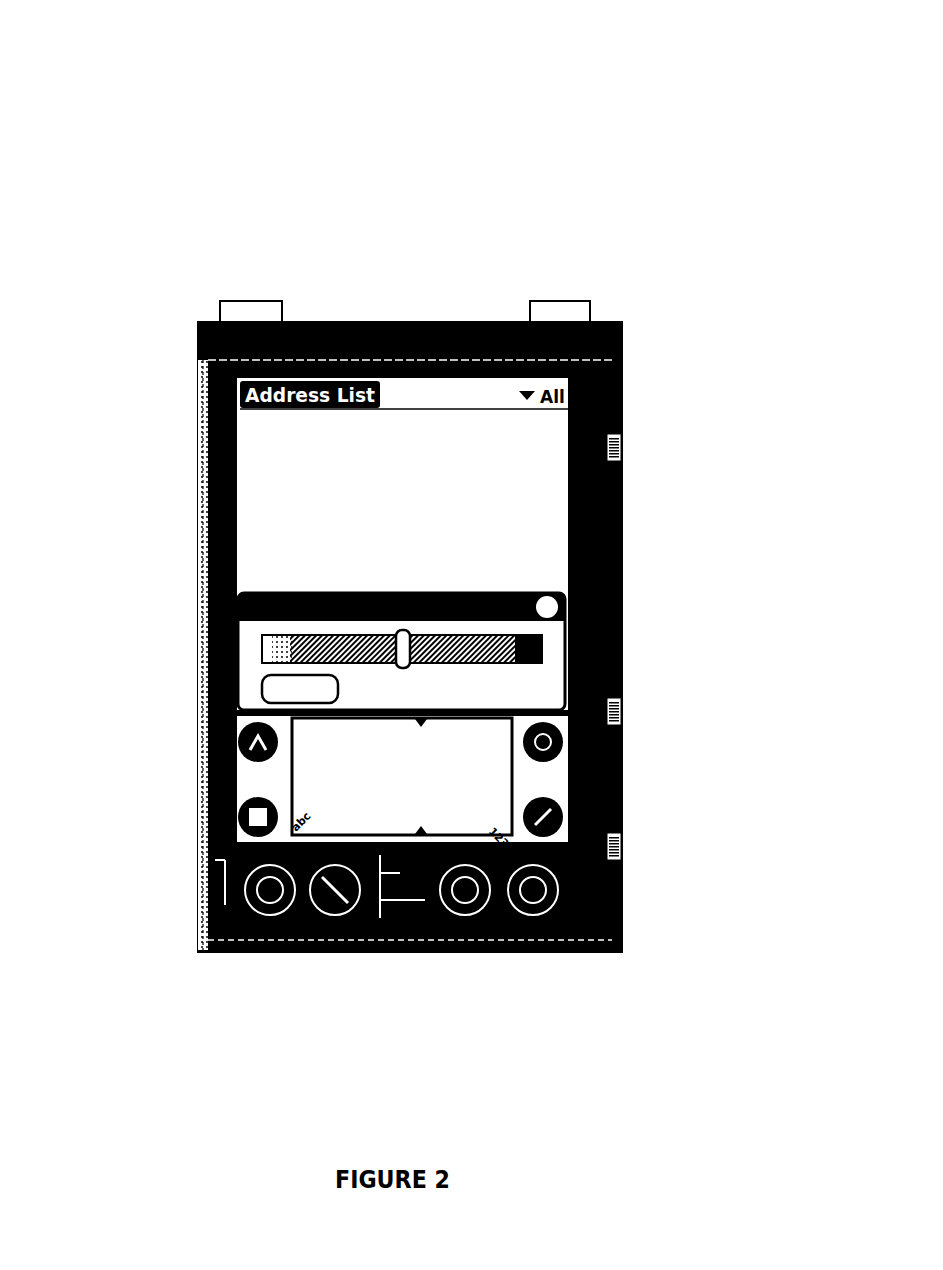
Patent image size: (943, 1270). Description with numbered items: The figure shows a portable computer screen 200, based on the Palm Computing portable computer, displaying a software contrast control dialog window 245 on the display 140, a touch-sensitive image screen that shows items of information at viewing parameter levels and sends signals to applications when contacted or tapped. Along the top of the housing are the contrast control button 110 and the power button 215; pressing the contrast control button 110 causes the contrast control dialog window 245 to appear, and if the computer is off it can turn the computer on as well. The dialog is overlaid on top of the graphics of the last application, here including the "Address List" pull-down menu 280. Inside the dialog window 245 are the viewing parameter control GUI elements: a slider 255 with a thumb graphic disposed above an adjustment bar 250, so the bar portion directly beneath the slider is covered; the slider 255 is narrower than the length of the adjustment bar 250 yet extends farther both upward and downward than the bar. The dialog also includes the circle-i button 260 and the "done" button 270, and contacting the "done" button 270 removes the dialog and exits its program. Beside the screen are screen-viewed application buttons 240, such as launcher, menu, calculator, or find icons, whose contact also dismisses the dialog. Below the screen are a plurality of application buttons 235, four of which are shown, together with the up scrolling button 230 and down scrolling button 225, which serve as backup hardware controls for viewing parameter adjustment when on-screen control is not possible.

The pilot simulator display 200 is at (413, 148).
The contrast control button 110 is at (243, 300).
The power button 215 is at (563, 300).
The display 140 is at (623, 345).
The "Address List" pull-down menu 280 is at (198, 383).
The contrast control dialog window 245 is at (480, 593).
The circle-i button 260 is at (623, 605).
The adjustment bar 250 is at (542, 656).
The slider 255 is at (407, 668).
The screen-viewed application buttons 240 is at (620, 763).
The "done" button 270 is at (262, 690).
The application buttons 235 is at (235, 953).
The up scrolling button 230 is at (365, 953).
The down scrolling button 225 is at (413, 953).